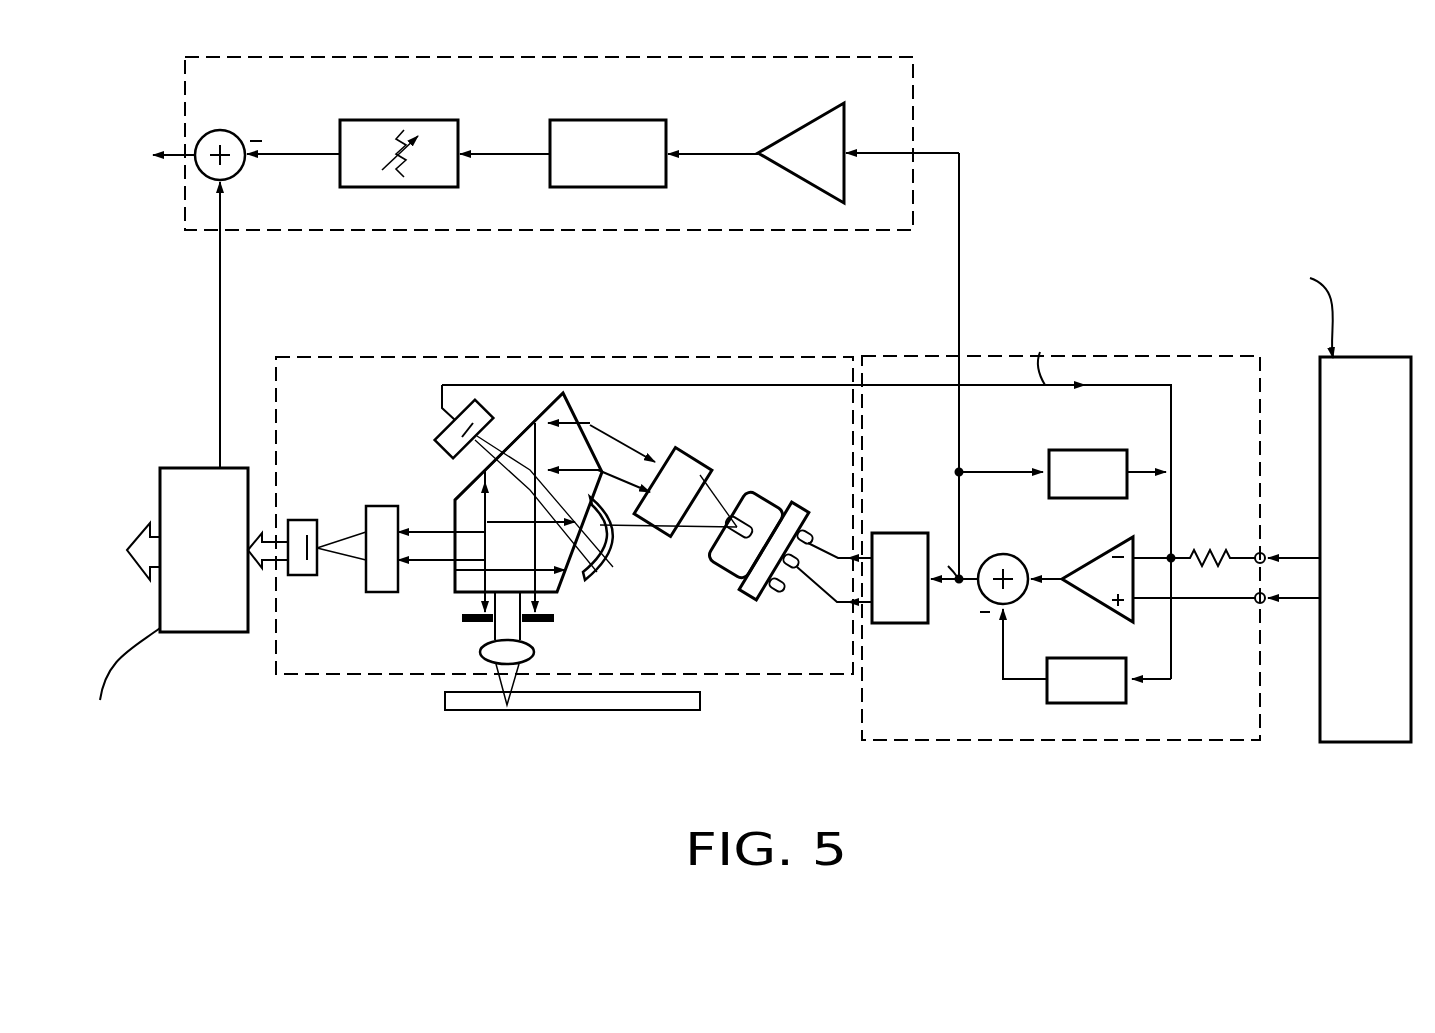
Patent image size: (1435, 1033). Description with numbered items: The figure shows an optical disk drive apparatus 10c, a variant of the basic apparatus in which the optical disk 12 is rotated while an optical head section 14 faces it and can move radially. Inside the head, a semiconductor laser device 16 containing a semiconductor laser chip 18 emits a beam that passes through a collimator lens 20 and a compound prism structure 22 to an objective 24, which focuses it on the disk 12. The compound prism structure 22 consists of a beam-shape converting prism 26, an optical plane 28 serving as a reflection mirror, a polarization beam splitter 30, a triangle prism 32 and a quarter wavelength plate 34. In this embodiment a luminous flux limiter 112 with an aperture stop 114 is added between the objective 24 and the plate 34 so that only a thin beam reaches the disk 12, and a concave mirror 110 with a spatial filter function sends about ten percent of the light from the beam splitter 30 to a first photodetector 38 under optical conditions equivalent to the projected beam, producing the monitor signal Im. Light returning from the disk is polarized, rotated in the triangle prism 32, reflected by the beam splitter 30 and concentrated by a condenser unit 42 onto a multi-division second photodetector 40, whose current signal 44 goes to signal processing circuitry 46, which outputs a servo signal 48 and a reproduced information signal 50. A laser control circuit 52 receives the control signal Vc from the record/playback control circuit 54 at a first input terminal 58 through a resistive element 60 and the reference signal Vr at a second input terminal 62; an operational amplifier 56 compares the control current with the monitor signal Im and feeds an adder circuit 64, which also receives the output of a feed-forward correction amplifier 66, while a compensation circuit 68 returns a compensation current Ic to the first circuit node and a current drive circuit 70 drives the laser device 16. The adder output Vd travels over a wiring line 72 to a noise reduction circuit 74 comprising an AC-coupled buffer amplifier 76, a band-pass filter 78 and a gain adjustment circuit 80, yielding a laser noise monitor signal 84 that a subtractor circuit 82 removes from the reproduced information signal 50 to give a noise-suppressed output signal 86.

The optical disk drive apparatus 10c is at (1050, 160).
The optical disk 12 is at (601, 710).
The optical head section 14 is at (800, 357).
The semiconductor laser device 16 is at (751, 600).
The semiconductor laser chip 18 is at (748, 502).
The collimator lens 20 is at (696, 456).
The compound prism structure 22 is at (570, 395).
The objective 24 is at (520, 650).
The beam-shape converting prism 26 is at (598, 432).
The optical plane 28 is at (520, 436).
The polarization beam splitter 30 is at (455, 507).
The triangle prism 32 is at (463, 584).
The quarter wavelength plate 34 is at (470, 601).
The first photodetector 38 is at (438, 422).
The second photodetector 40 is at (310, 521).
The condenser unit 42 is at (376, 507).
The current signal 44 is at (284, 537).
The signal processing circuitry 46 is at (186, 632).
The servo signal 48 is at (150, 527).
The reproduced information signal 50 is at (220, 320).
The laser control circuit 52 is at (1228, 356).
The record/playback control circuit 54 is at (1394, 357).
The operational amplifier 56 is at (1082, 554).
The first input terminal 58 is at (1256, 554).
The resistive element 60 is at (1210, 567).
The second input terminal 62 is at (1256, 606).
The adder circuit 64 is at (995, 554).
The feed-forward correction amplifier 66 is at (1047, 703).
The compensation circuit 68 is at (1056, 450).
The current drive circuit 70 is at (884, 533).
The wiring line 72 is at (963, 196).
The noise reduction circuit 74 is at (916, 73).
The AC-coupled buffer amplifier 76 is at (853, 126).
The band-pass filter 78 is at (640, 120).
The gain adjustment circuit 80 is at (437, 120).
The subtractor circuit 82 is at (228, 137).
The laser noise monitor signal 84 is at (312, 156).
The output signal 86 is at (180, 150).
The concave mirror 110 is at (612, 550).
The luminous flux limiter 112 is at (555, 618).
The aperture stop 114 is at (464, 623).